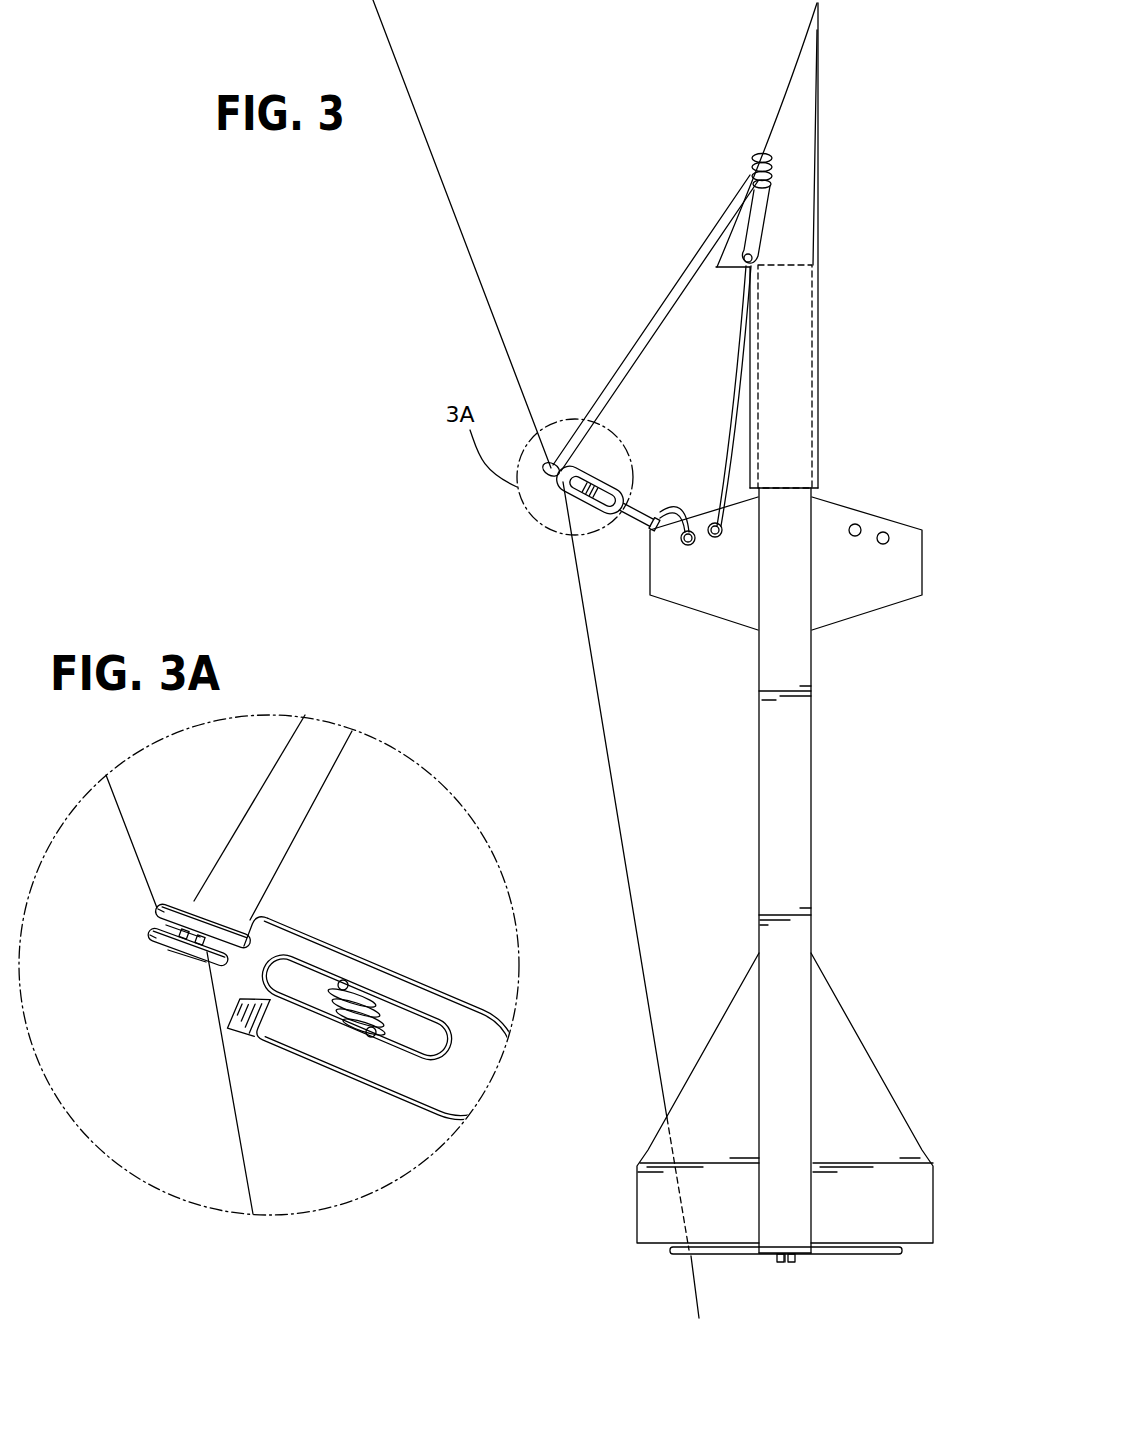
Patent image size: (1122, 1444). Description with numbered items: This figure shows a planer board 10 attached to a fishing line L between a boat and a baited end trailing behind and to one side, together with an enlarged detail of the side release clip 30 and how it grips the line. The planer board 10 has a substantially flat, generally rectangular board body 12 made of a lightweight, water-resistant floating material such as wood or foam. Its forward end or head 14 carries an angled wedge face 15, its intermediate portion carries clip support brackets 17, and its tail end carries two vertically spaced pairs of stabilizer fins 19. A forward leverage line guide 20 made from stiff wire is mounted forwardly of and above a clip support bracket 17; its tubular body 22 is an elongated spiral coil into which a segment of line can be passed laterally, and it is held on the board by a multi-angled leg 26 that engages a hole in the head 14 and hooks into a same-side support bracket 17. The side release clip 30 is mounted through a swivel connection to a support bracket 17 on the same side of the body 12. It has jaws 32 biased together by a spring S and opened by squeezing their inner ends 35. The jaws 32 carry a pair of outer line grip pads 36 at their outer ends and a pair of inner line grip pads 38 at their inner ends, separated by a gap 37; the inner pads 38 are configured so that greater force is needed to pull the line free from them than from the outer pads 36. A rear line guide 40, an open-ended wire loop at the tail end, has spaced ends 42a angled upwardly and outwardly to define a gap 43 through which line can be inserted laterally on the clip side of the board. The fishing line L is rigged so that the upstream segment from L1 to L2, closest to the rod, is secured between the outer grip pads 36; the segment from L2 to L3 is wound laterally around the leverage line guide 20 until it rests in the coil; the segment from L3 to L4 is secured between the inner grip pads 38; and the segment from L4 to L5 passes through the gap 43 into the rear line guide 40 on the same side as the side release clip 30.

In FIG. 3, the planer board 10 is at (786, 664).
In FIG. 3, the board body 12 is at (818, 800).
In FIG. 3, the head 14 is at (808, 150).
In FIG. 3, the angled wedge face 15 is at (785, 94).
In FIG. 3, the clip support brackets 17 is at (836, 507).
In FIG. 3, the stabilizer fins 19 is at (717, 1068).
In FIG. 3, the leverage line guide 20 is at (770, 210).
In FIG. 3, the tubular body 22 is at (776, 172).
In FIG. 3, the multi-angled leg 26 is at (735, 428).
In FIG. 3, the side release clip 30 is at (603, 530).
In FIG. 3A, the side release clip 30 is at (288, 966).
In FIG. 3A, the jaws 32 is at (170, 900).
In FIG. 3A, the inner ends 35 is at (426, 985).
In FIG. 3A, the outer line grip pads 36 is at (190, 905).
In FIG. 3A, the gap 37 is at (165, 968).
In FIG. 3A, the inner line grip pads 38 is at (240, 912).
In FIG. 3, the rear line guide 40 is at (886, 1258).
In FIG. 3, the spaced ends 42a is at (778, 1262).
In FIG. 3, the gap 43 is at (786, 1264).
In FIG. 3A, the spring S is at (352, 990).
In FIG. 3, the fishing line L is at (458, 112).
In FIG. 3, the upstream end of first line segment L1 is at (468, 245).
In FIG. 3A, the upstream end of first line segment L1 is at (126, 868).
In FIG. 3, the boundary between first and second line segments L2 is at (674, 285).
In FIG. 3A, the boundary between first and second line segments L2 is at (262, 792).
In FIG. 3, the boundary between second and third line segments L3 is at (622, 393).
In FIG. 3A, the boundary between second and third line segments L3 is at (317, 786).
In FIG. 3, the boundary between third and fourth line segments L4 is at (628, 845).
In FIG. 3A, the boundary between third and fourth line segments L4 is at (247, 1168).
In FIG. 3, the downstream end of fourth line segment L5 is at (696, 1280).